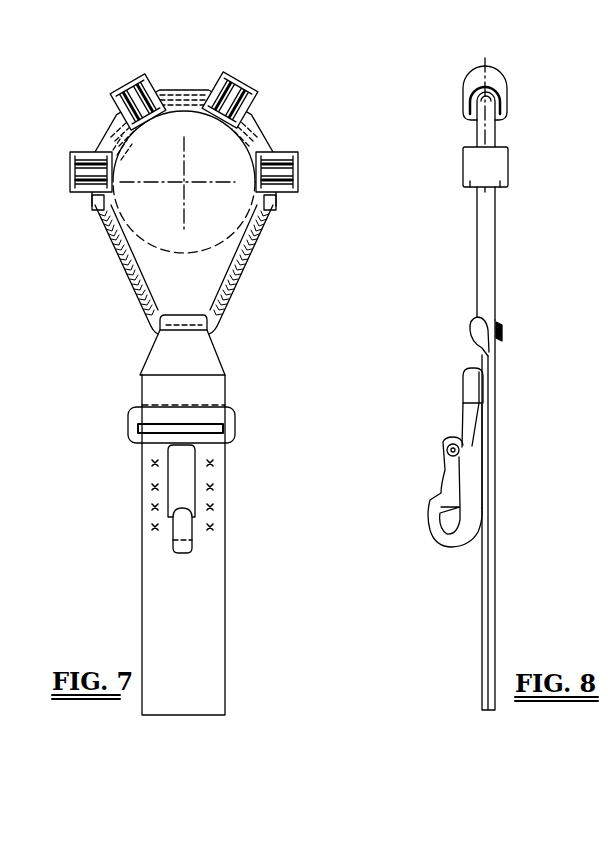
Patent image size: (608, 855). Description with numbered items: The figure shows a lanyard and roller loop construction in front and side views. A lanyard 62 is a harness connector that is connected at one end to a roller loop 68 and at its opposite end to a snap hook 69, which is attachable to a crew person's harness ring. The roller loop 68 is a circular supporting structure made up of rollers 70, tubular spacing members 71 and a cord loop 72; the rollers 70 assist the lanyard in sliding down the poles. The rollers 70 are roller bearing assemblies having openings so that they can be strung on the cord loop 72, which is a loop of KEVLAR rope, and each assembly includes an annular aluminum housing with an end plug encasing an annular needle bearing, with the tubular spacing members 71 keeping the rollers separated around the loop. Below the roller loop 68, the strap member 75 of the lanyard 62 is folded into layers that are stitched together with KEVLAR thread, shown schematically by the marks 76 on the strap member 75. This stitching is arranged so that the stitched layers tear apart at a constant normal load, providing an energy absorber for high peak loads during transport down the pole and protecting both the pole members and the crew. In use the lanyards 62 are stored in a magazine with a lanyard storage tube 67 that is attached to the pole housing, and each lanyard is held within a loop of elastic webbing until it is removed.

In FIG. 8, the lanyard 62 is at (495, 563).
In FIG. 8, the lanyard storage tube 67 is at (487, 384).
In FIG. 7, the roller loop 68 is at (243, 303).
In FIG. 7, the snap hook 69 is at (185, 478).
In FIG. 8, the snap hook 69 is at (438, 543).
In FIG. 7, the roller 70 is at (297, 160).
In FIG. 8, the roller 70 is at (500, 172).
In FIG. 7, the tubular spacing member 71 is at (263, 128).
In FIG. 8, the tubular spacing member 71 is at (488, 128).
In FIG. 7, the cord loop 72 is at (250, 260).
In FIG. 8, the cord loop 72 is at (489, 253).
In FIG. 7, the strap member 75 is at (225, 613).
In FIG. 7, the marks 76 is at (157, 530).